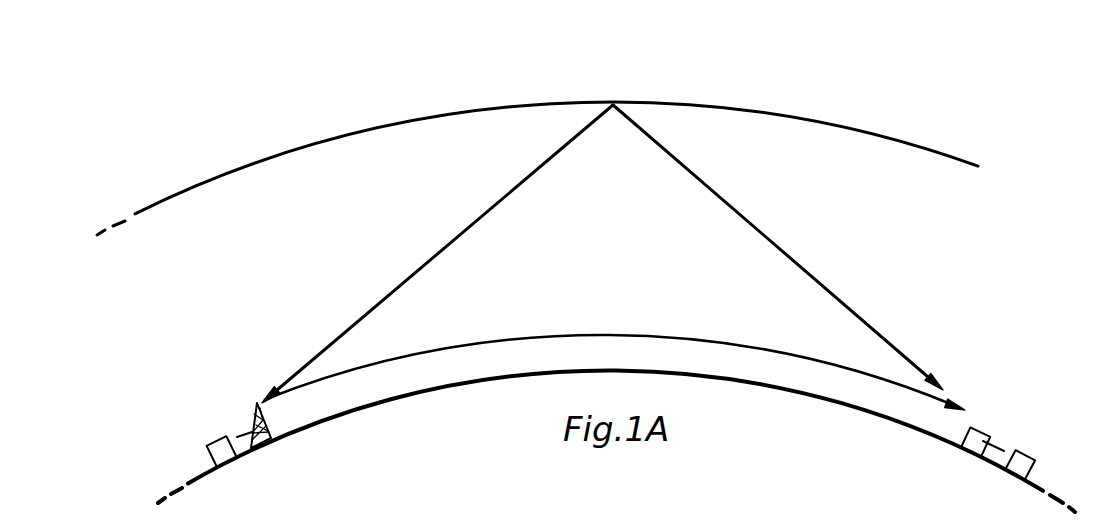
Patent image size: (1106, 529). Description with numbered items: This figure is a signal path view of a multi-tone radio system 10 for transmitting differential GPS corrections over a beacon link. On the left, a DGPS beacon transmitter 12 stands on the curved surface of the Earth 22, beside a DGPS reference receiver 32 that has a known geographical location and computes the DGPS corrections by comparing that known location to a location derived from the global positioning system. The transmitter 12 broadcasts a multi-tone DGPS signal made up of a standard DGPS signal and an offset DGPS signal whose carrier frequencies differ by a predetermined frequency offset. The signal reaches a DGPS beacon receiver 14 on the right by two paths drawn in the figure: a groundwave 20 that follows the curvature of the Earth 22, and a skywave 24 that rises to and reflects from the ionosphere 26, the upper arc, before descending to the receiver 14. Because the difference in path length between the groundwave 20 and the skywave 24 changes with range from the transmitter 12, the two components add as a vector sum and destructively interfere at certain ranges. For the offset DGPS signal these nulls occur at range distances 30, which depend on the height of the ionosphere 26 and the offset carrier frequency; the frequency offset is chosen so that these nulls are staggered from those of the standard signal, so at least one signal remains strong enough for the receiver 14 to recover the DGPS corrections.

The multi-tone radio system 10 is at (226, 165).
The DGPS beacon transmitter 12 is at (250, 410).
The DGPS beacon receiver 14 is at (986, 426).
The groundwave 20 is at (608, 335).
The Earth 22 is at (612, 355).
The skywave 24 is at (658, 145).
The ionosphere 26 is at (490, 116).
The range distances 30 is at (1026, 450).
The DGPS reference receiver 32 is at (219, 442).